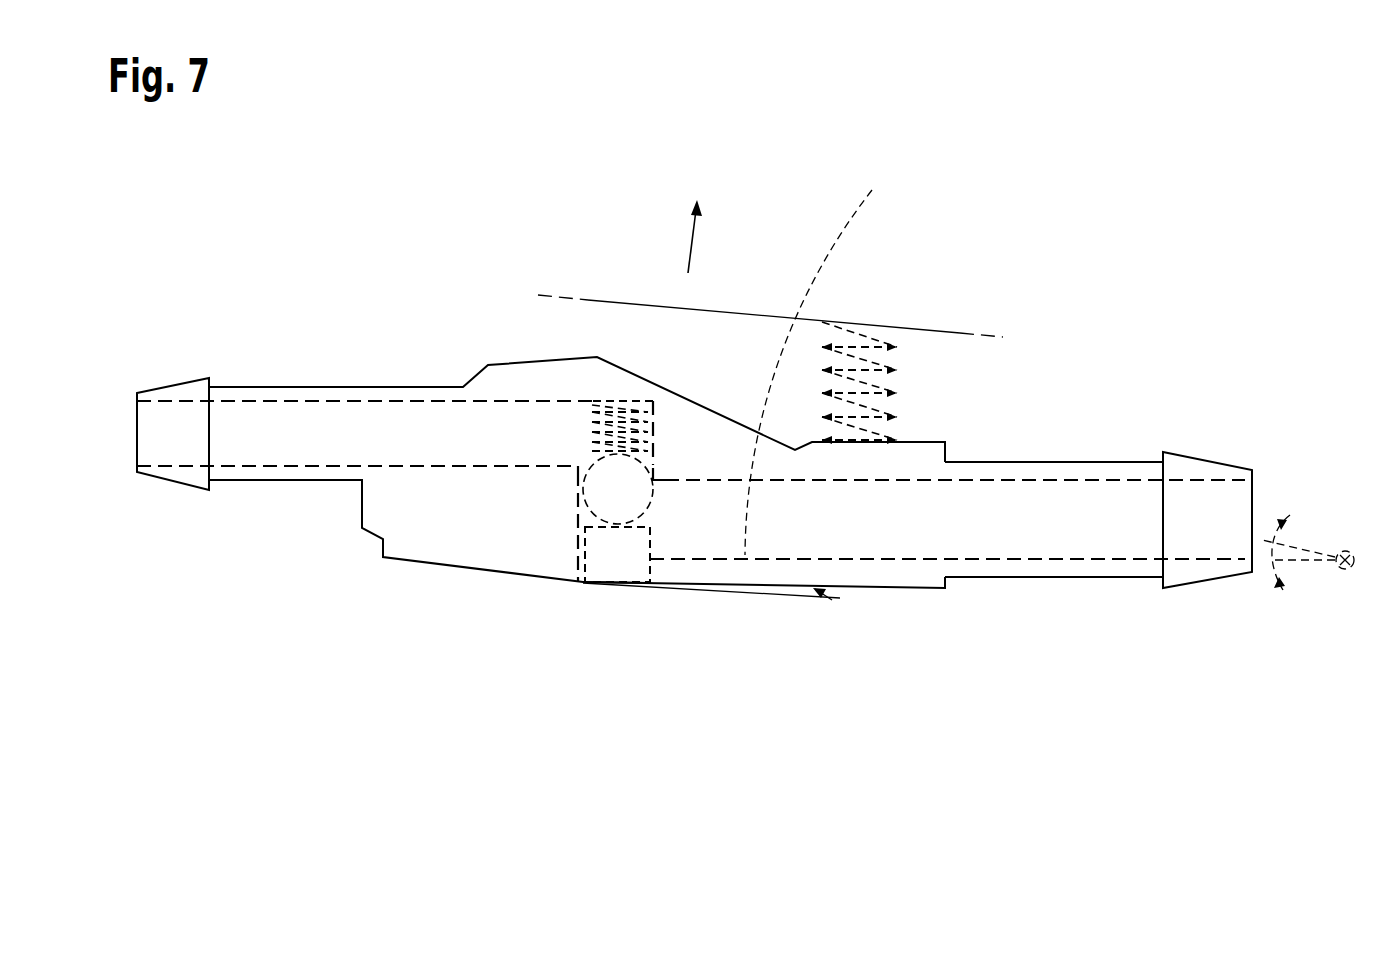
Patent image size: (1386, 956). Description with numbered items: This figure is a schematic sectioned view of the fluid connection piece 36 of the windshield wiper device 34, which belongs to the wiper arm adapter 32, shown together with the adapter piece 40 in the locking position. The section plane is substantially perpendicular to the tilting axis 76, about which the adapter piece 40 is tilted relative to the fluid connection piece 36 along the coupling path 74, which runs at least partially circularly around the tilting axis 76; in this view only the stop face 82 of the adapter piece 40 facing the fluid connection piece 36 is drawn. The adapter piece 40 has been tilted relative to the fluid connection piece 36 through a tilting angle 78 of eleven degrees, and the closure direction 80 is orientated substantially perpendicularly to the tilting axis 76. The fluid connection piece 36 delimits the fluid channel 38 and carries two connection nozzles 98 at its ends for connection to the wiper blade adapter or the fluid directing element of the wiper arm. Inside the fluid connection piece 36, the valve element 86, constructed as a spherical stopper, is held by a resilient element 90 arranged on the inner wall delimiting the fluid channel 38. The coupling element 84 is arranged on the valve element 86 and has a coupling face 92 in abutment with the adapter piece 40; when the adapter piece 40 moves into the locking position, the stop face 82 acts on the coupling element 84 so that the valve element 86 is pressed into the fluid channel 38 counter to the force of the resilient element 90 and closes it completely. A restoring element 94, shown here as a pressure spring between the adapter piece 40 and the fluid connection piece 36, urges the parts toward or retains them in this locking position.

The wiper arm adapter 32 is at (1182, 202).
The windshield wiper device 34 is at (1102, 205).
The fluid connection piece 36 is at (698, 568).
The fluid channel 38 is at (1088, 478).
The adapter piece 40 is at (940, 330).
The coupling path 74 is at (808, 288).
The tilting axis 76 is at (1345, 575).
The tilting angle 78 is at (1262, 540).
The closure direction 80 is at (690, 231).
The stop face 82 is at (828, 598).
The coupling element 84 is at (593, 548).
The valve element 86 is at (593, 493).
The resilient element 90 is at (653, 422).
The coupling face 92 is at (631, 593).
The restoring element 94 is at (880, 392).
The connection nozzles 98 is at (190, 392).